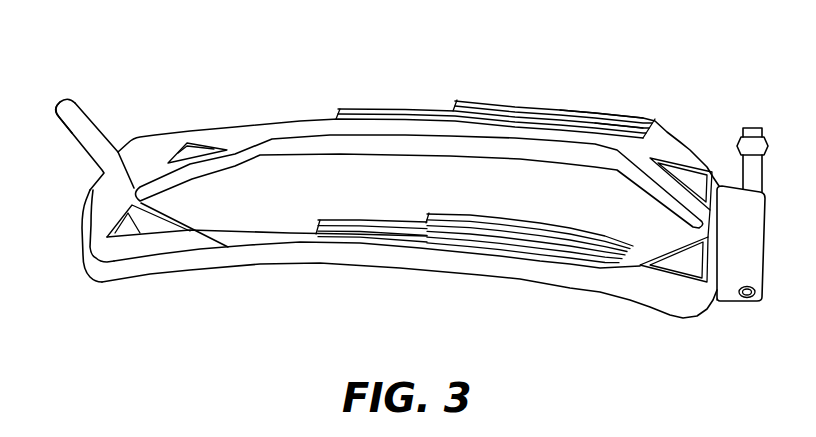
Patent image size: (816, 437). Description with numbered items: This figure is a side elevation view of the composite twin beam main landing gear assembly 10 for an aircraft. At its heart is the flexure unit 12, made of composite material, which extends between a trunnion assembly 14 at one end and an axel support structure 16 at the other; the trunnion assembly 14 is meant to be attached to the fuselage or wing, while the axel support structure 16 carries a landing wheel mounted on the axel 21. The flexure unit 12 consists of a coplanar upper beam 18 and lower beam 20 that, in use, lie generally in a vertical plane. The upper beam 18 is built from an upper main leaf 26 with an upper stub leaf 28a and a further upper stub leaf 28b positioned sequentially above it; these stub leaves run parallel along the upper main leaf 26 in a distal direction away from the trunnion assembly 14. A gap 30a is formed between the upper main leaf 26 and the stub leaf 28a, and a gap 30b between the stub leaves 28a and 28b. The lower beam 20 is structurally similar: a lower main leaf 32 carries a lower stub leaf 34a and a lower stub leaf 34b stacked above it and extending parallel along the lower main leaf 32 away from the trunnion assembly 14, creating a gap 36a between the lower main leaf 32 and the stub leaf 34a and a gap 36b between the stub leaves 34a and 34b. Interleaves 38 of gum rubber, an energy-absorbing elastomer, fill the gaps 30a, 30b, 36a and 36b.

The composite twin beam main landing gear assembly 10 is at (399, 169).
The flexure unit 12 is at (260, 207).
The trunnion assembly 14 is at (704, 196).
The axel support structure 16 is at (95, 128).
The upper beam 18 is at (596, 96).
The lower beam 20 is at (373, 276).
The axel 21 is at (54, 146).
The upper main leaf 26 is at (418, 139).
The upper stub leaf 28a is at (492, 88).
The upper stub leaf 28b is at (552, 80).
The gap 30a is at (661, 92).
The gap 30b is at (604, 84).
The lower main leaf 32 is at (148, 266).
The lower stub leaf 34a is at (344, 271).
The lower stub leaf 34b is at (529, 272).
The gap 36a is at (538, 295).
The gap 36b is at (525, 218).
The interleaves 38 is at (473, 174).